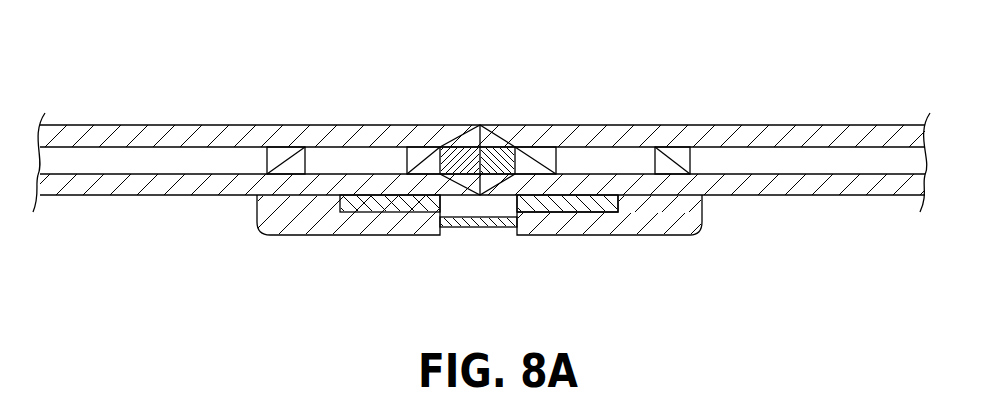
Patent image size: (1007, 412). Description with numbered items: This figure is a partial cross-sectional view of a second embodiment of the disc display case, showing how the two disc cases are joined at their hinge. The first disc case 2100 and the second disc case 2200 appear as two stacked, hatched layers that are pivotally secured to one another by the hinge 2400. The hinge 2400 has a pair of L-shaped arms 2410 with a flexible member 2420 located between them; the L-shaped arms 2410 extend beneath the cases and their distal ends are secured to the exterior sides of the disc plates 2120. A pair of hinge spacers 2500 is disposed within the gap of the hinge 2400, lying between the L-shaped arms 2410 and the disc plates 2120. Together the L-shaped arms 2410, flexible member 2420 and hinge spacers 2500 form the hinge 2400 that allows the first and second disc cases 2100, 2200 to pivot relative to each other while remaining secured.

The first disc case 2100 is at (203, 125).
The second disc case 2200 is at (798, 125).
The disc plate 2120 is at (867, 195).
The L-shaped arm 2410 is at (267, 232).
The hinge 2400 is at (690, 235).
The hinge spacer 2500 is at (367, 235).
The flexible member 2420 is at (483, 235).